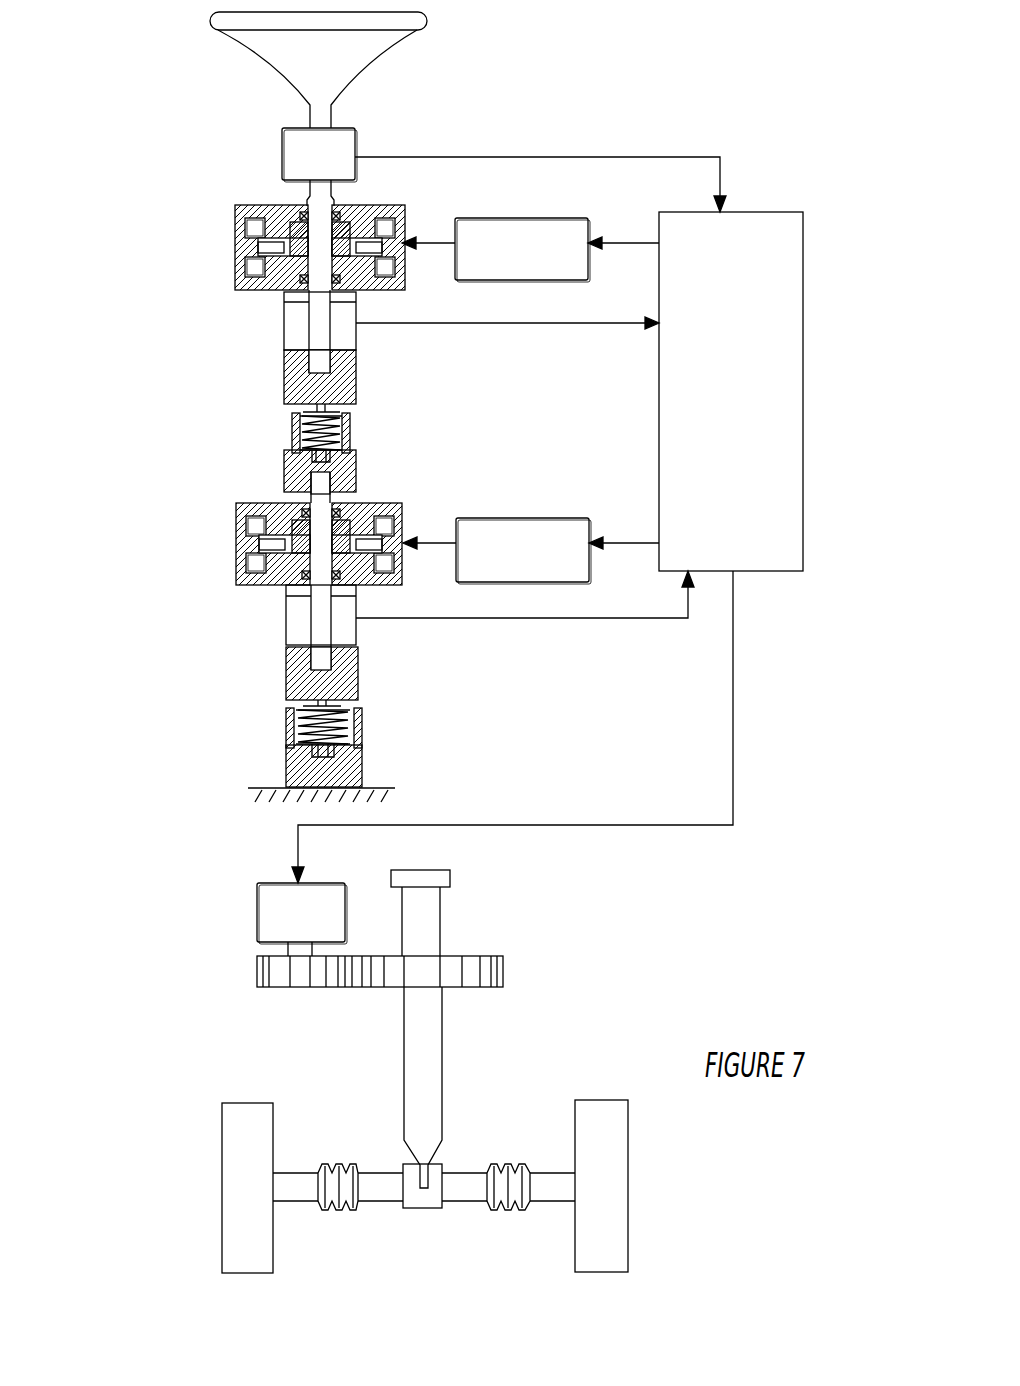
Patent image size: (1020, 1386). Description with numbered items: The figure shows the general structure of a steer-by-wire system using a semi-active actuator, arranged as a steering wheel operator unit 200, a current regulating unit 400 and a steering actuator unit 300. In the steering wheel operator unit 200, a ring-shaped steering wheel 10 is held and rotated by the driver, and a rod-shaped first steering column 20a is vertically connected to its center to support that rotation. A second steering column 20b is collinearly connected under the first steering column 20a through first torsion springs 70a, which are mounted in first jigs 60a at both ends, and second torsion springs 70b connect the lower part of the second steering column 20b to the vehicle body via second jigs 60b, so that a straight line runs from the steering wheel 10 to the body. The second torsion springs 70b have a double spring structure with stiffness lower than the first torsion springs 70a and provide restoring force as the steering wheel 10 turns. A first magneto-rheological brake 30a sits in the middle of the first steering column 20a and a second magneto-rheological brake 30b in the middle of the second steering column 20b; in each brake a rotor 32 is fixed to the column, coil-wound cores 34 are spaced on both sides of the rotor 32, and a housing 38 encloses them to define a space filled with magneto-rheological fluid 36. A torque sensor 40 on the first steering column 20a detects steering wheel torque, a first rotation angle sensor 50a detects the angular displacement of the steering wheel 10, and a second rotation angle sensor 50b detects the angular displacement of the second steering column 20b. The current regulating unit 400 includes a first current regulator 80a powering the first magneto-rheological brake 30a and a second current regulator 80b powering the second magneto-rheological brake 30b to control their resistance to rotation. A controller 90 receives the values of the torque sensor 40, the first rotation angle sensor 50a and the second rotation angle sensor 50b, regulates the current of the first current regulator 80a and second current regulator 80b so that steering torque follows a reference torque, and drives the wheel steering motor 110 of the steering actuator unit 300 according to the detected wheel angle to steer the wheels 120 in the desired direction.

The steering wheel 10 is at (414, 22).
The first steering column 20a is at (316, 113).
The second steering column 20b is at (300, 494).
The first magneto-rheological brake 30a is at (266, 239).
The second magneto-rheological brake 30b is at (222, 545).
The rotor 32 is at (252, 256).
The cores 34 is at (255, 268).
The magneto-rheological fluid 36 is at (252, 250).
The housing 38 is at (250, 207).
The torque sensor 40 is at (282, 160).
The first rotation angle sensor 50a is at (296, 330).
The second rotation angle sensor 50b is at (298, 624).
The first jigs 60a is at (290, 425).
The second jigs 60b is at (292, 725).
The first torsion springs 70a is at (300, 437).
The second torsion springs 70b is at (300, 734).
The first current regulator 80a is at (510, 218).
The second current regulator 80b is at (527, 518).
The controller 90 is at (753, 212).
The wheel steering motor 110 is at (265, 931).
The wheels 120 is at (617, 1180).
The steering wheel operator unit 200 is at (150, 137).
The steering actuator unit 300 is at (210, 860).
The current regulating unit 400 is at (612, 135).